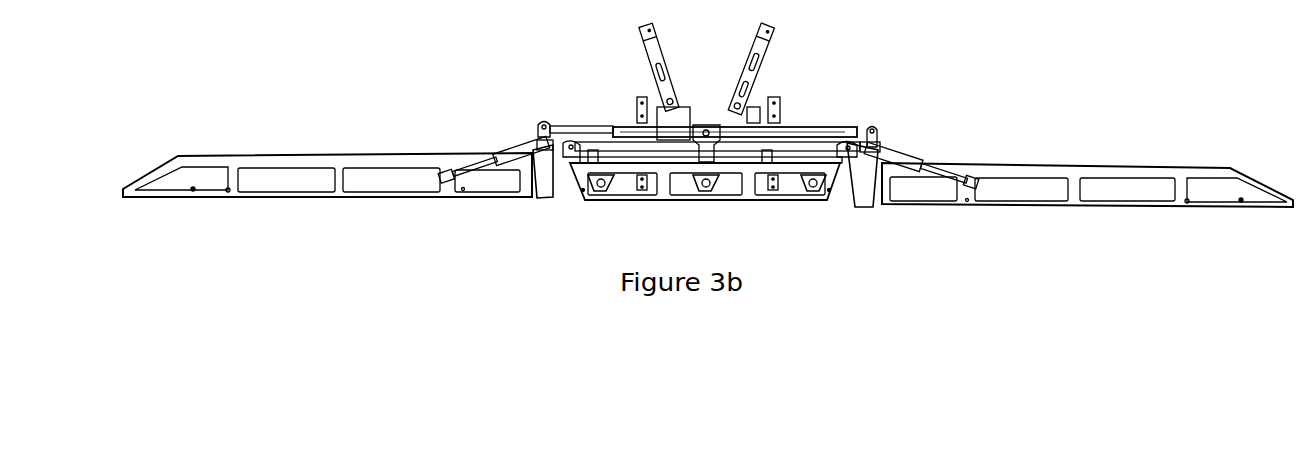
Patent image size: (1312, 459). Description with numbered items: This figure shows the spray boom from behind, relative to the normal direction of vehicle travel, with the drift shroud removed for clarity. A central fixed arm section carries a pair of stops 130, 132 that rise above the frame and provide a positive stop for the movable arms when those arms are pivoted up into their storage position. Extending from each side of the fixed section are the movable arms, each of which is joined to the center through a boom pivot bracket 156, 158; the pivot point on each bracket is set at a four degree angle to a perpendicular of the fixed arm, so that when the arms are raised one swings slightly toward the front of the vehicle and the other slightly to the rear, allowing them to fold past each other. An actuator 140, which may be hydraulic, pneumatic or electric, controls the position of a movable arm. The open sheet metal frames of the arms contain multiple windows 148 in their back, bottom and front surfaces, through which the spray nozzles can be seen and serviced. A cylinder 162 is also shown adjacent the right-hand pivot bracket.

The stop 130 is at (767, 51).
The stop 132 is at (652, 57).
The actuator 140 is at (792, 130).
The windows 148 is at (600, 200).
The boom pivot bracket 156 is at (543, 200).
The boom pivot bracket 158 is at (858, 202).
The hydraulic cylinder 162 is at (883, 208).